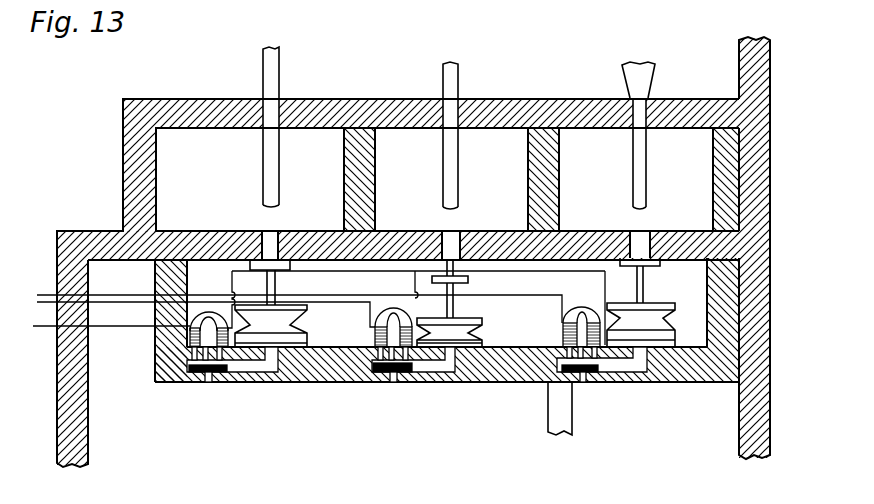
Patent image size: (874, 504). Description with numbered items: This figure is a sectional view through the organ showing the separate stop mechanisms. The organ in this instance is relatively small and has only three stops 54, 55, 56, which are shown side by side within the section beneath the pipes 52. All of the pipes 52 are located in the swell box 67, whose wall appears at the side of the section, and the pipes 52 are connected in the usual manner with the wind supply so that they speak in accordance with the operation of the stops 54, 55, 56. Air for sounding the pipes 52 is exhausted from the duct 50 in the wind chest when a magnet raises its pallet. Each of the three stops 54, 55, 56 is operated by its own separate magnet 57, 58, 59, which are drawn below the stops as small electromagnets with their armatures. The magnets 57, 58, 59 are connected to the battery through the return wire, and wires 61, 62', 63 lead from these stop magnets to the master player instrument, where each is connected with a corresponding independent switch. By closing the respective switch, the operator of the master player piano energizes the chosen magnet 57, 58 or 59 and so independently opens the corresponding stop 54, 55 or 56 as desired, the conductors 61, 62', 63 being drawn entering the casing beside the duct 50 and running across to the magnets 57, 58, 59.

The duct 50 is at (57, 273).
The pipes 52 is at (286, 91).
The stop 54 is at (652, 263).
The stop 55 is at (468, 280).
The stop 56 is at (282, 270).
The magnet 57 is at (563, 333).
The magnet 58 is at (375, 333).
The magnet 59 is at (186, 338).
The wire 61 is at (299, 298).
The wire 62' is at (206, 314).
The wire 63 is at (50, 328).
The swell box 67 is at (739, 67).